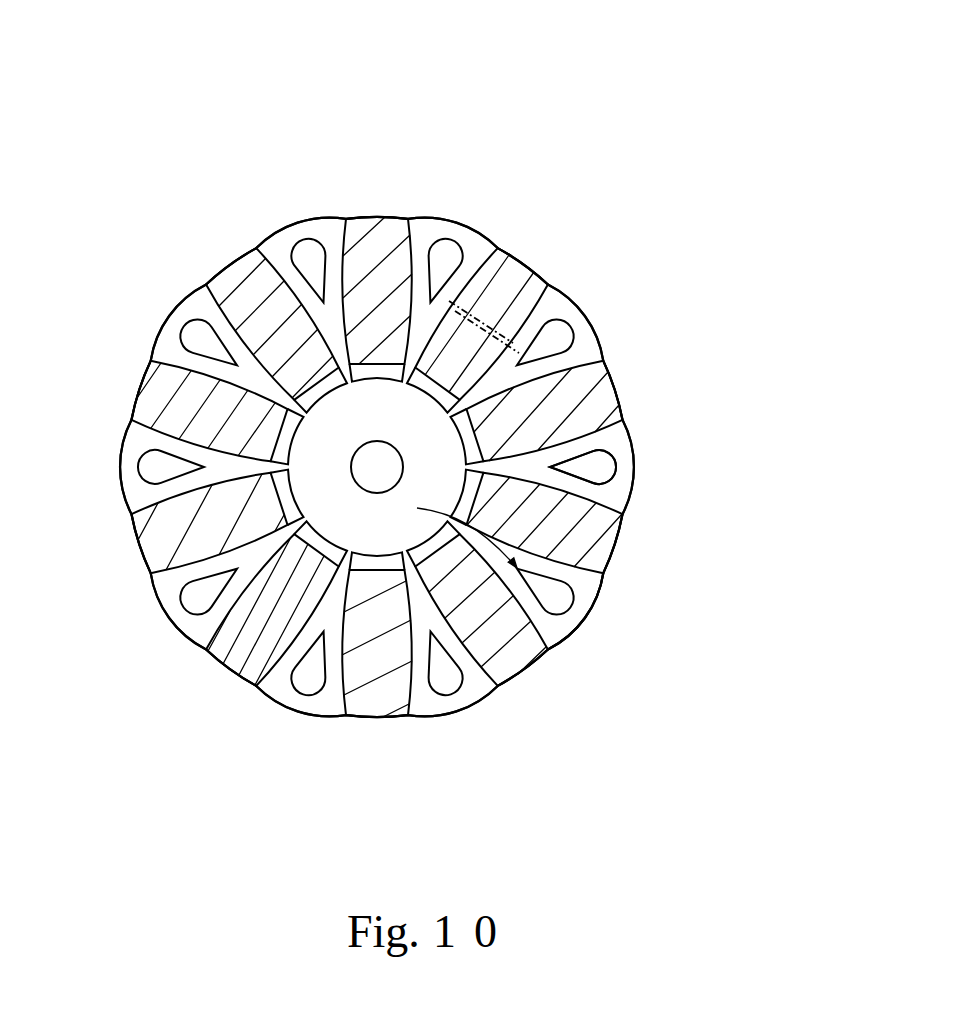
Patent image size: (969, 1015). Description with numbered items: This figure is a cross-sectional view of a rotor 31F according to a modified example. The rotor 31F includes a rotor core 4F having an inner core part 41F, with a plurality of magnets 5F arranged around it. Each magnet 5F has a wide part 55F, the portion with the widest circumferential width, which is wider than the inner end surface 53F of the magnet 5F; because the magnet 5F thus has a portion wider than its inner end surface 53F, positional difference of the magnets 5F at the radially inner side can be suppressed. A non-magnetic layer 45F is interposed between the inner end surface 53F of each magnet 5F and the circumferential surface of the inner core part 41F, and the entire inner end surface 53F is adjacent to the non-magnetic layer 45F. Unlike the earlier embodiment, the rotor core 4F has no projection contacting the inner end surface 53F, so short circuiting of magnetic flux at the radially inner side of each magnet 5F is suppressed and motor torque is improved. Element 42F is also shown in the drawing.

The rotor 31F is at (581, 132).
The rotor core 4F is at (150, 590).
The magnet 5F is at (250, 658).
The inner core part 41F is at (563, 640).
The flux barrier hole 42F is at (602, 493).
The non-magnetic layer 45F is at (278, 452).
The inner end surface 53F is at (452, 394).
The wide part 55F is at (490, 322).